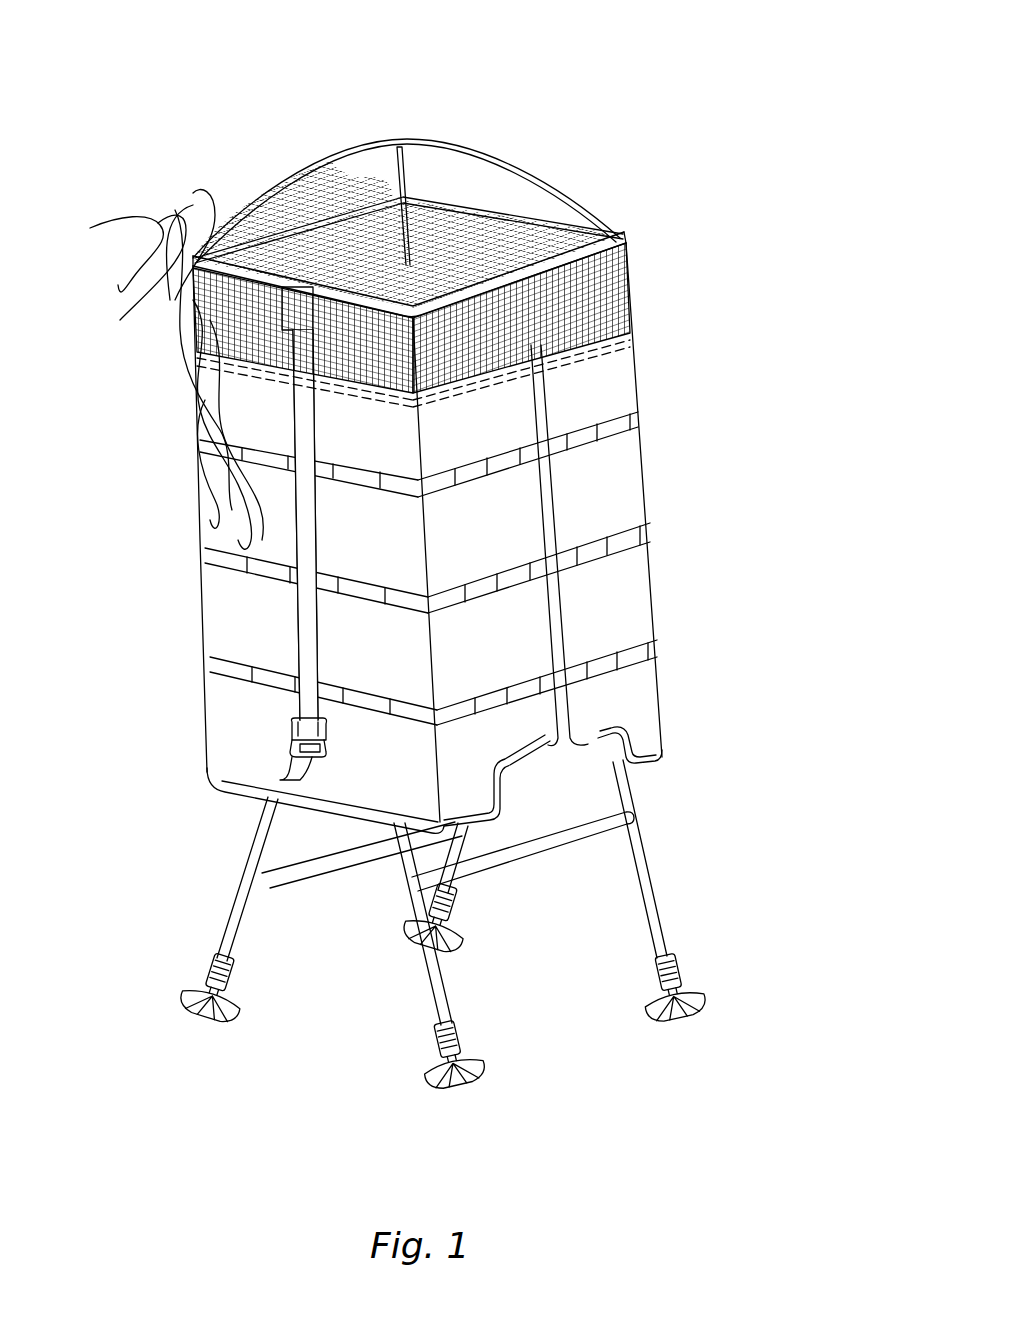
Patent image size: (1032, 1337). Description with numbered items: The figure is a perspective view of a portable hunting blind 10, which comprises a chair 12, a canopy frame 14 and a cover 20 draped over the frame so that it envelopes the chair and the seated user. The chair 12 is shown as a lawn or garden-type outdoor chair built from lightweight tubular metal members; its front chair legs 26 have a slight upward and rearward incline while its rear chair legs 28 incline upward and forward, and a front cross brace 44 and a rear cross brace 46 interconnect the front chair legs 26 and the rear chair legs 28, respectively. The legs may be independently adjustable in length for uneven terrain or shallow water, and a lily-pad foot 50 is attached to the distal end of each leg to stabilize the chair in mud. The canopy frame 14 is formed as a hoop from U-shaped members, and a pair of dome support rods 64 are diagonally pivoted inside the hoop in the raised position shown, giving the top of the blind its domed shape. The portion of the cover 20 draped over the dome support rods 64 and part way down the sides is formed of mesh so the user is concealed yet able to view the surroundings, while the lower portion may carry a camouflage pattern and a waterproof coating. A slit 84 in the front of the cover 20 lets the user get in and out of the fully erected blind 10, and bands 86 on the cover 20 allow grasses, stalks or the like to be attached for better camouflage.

The portable hunting blind 10 is at (692, 522).
The chair 12 is at (428, 972).
The canopy frame 14 is at (589, 184).
The cover 20 is at (630, 290).
The front chair legs 26 is at (650, 863).
The rear chair legs 28 is at (257, 830).
The front cross brace 44 is at (515, 865).
The rear cross brace 46 is at (285, 878).
The lily-pad foot 50 is at (190, 1020).
The dome support rods 64 is at (408, 180).
The slit 84 is at (548, 500).
The bands 86 is at (265, 572).